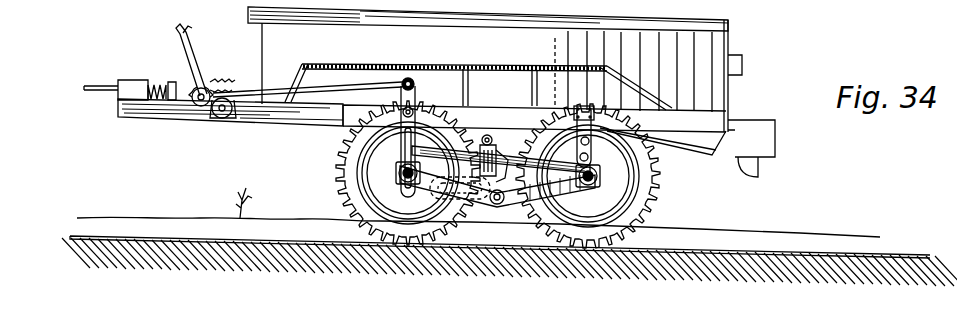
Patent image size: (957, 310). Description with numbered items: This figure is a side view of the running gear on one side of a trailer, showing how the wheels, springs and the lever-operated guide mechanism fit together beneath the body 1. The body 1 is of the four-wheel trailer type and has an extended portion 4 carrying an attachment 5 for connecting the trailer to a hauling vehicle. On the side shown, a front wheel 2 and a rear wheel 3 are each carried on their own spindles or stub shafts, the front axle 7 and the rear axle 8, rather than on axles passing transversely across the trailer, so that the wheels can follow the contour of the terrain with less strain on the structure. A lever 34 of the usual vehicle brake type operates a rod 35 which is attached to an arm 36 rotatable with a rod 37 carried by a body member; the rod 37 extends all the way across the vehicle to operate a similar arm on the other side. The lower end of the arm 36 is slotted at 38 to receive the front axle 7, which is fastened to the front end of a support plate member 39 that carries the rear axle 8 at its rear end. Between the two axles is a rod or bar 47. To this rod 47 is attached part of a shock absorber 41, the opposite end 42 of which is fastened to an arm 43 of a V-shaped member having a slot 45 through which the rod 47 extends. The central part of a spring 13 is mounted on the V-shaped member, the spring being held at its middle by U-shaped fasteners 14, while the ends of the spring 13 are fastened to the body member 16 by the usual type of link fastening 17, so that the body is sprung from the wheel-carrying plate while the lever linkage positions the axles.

The body 1 is at (266, 33).
The front wheels 2 is at (338, 140).
The rear wheels 3 is at (655, 198).
The extended portion 4 is at (250, 100).
The attachment 5 is at (137, 82).
The front axle 7 is at (345, 149).
The rear axle 8 is at (600, 178).
The spring 13 is at (530, 165).
The U-shaped fasteners 14 is at (576, 138).
The body member 16 is at (272, 105).
The link fastening 17 is at (660, 152).
The lever 34 is at (200, 70).
The rod 35 is at (325, 85).
The arm 36 is at (412, 105).
The rod 37 is at (502, 89).
The slot 38 is at (340, 190).
The support plate member 39 is at (428, 188).
The shock absorber 41 is at (485, 137).
The opposite end 42 is at (499, 148).
The arm 43 is at (489, 134).
The slot 45 is at (494, 200).
The rod or bar 47 is at (500, 205).